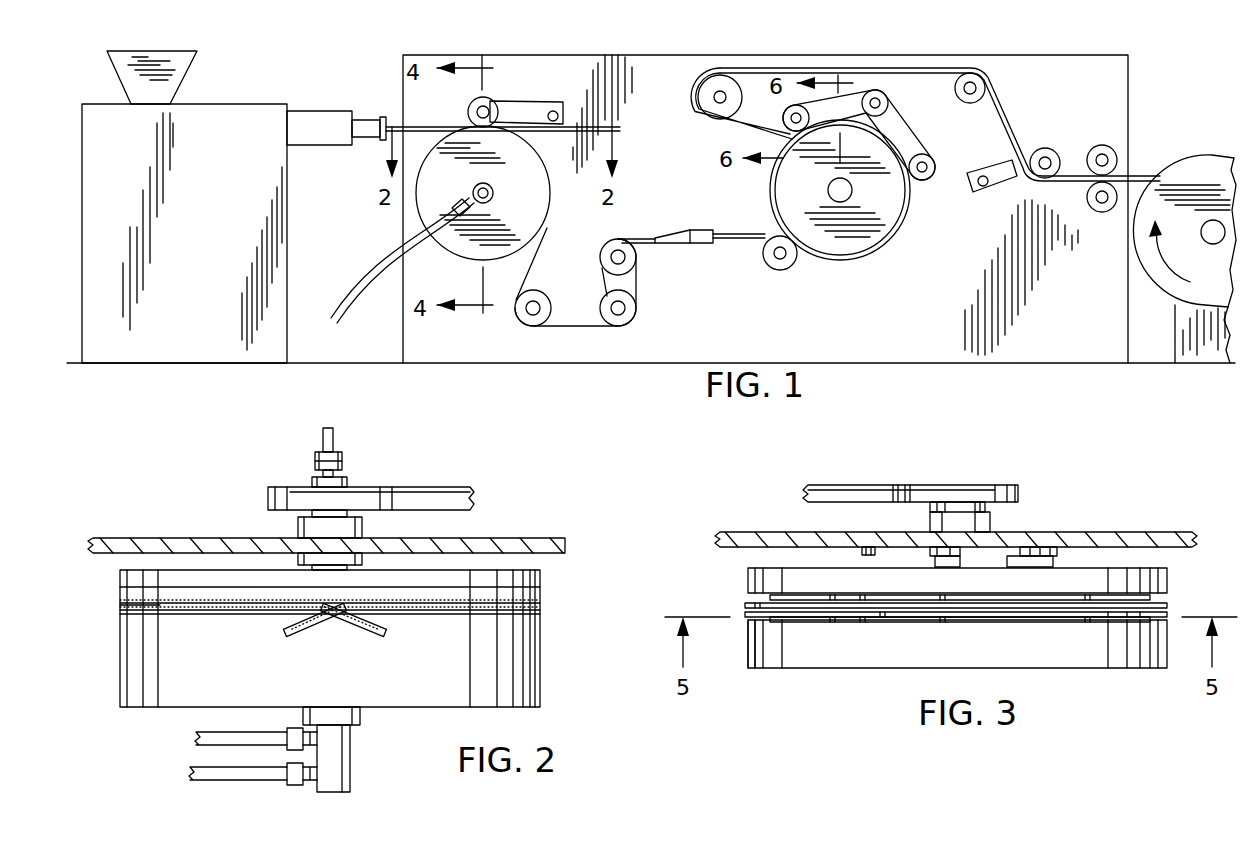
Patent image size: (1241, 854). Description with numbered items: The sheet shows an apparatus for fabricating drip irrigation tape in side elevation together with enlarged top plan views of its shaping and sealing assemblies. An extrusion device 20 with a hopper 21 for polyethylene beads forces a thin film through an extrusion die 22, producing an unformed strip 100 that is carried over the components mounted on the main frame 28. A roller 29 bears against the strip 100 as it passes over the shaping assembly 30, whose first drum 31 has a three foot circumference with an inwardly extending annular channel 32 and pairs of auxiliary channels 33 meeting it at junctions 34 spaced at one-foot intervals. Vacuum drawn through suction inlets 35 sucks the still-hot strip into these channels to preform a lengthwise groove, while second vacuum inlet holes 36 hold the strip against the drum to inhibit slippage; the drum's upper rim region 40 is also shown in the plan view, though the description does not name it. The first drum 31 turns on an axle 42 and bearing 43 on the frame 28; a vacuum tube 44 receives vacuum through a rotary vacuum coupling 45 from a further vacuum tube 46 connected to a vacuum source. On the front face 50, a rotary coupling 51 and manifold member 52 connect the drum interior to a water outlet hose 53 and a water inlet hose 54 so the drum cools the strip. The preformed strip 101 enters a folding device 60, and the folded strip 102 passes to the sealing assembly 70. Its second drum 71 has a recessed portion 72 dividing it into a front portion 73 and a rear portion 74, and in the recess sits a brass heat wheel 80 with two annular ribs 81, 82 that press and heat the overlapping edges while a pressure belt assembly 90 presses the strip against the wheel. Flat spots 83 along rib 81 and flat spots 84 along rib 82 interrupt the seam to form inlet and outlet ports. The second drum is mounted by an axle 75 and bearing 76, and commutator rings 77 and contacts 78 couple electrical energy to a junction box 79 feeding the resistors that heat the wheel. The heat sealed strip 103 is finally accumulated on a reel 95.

In FIG. 1, the extrusion device 20 is at (88, 118).
In FIG. 1, the hopper 21 is at (182, 68).
In FIG. 1, the extrusion die 22 is at (378, 142).
In FIG. 1, the main frame 28 is at (1112, 99).
In FIG. 2, the main frame 28 is at (178, 540).
In FIG. 3, the main frame 28 is at (778, 540).
In FIG. 1, the roller 29 is at (497, 100).
In FIG. 1, the shaping assembly 30 is at (473, 226).
In FIG. 2, the shaping assembly 30 is at (336, 650).
In FIG. 1, the first drum 31 is at (512, 155).
In FIG. 2, the first drum 31 is at (520, 655).
In FIG. 2, the annular channel 32 is at (535, 609).
In FIG. 2, the auxiliary channels 33 is at (355, 631).
In FIG. 2, the junctions 34 is at (338, 610).
In FIG. 2, the suction inlets 35 is at (170, 616).
In FIG. 2, the second vacuum inlet holes 36 is at (142, 607).
In FIG. 2, the drum flange 40 is at (523, 580).
In FIG. 2, the axle 42 is at (348, 481).
In FIG. 2, the bearing 43 is at (362, 531).
In FIG. 2, the vacuum tube 44 is at (322, 474).
In FIG. 2, the rotary vacuum coupling 45 is at (343, 461).
In FIG. 2, the vacuum tube 46 is at (323, 440).
In FIG. 2, the front face 50 is at (478, 707).
In FIG. 1, the rotary coupling 51 is at (495, 192).
In FIG. 2, the rotary coupling 51 is at (362, 718).
In FIG. 1, the manifold member 52 is at (473, 191).
In FIG. 2, the manifold member 52 is at (350, 770).
In FIG. 2, the water outlet hose 53 is at (195, 737).
In FIG. 1, the water inlet hose 54 is at (366, 267).
In FIG. 2, the water inlet hose 54 is at (190, 771).
In FIG. 1, the folding device 60 is at (690, 231).
In FIG. 1, the sealing assembly 70 is at (764, 207).
In FIG. 3, the sealing assembly 70 is at (961, 634).
In FIG. 3, the second drum 71 is at (760, 669).
In FIG. 3, the recessed portion 72 is at (1168, 605).
In FIG. 3, the front portion 73 is at (1065, 655).
In FIG. 3, the rear portion 74 is at (1170, 578).
In FIG. 3, the axle 75 is at (940, 567).
In FIG. 3, the bearing 76 is at (992, 519).
In FIG. 3, the commutator rings 77 is at (862, 551).
In FIG. 3, the contacts 78 is at (1057, 556).
In FIG. 3, the junction box 79 is at (1018, 567).
In FIG. 3, the heat wheel 80 is at (884, 624).
In FIG. 3, the annular rib 81 is at (748, 616).
In FIG. 3, the annular rib 82 is at (748, 604).
In FIG. 3, the flat spots 83 is at (945, 617).
In FIG. 3, the flat spots 84 is at (786, 597).
In FIG. 1, the pressure belt assembly 90 is at (906, 151).
In FIG. 1, the reel 95 is at (1210, 155).
In FIG. 1, the strip 100 is at (430, 127).
In FIG. 1, the preformed strip 101 is at (642, 247).
In FIG. 1, the folded strip 102 is at (731, 243).
In FIG. 1, the heat sealed strip 103 is at (700, 120).